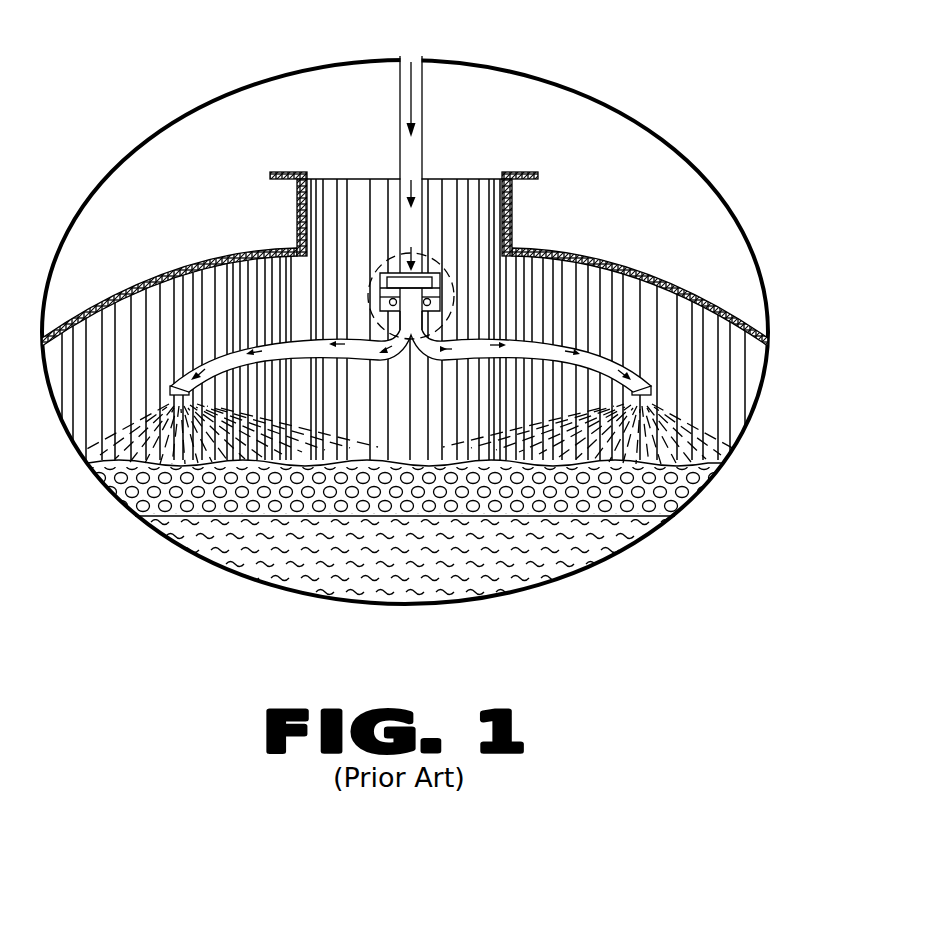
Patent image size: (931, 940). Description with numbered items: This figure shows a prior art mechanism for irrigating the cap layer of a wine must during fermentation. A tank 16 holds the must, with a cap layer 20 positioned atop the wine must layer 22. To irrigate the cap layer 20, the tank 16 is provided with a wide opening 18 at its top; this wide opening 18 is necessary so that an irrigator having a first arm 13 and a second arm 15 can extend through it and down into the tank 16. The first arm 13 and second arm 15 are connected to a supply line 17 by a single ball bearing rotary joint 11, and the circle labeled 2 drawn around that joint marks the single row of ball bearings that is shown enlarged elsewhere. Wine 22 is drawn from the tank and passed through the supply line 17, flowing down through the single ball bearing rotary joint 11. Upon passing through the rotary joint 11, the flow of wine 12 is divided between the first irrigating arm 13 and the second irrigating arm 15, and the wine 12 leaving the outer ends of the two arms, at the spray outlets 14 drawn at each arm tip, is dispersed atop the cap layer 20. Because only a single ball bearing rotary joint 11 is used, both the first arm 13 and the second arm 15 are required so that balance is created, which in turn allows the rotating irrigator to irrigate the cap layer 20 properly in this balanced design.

The circle 2 is at (449, 252).
The single ball bearing rotary joint 11 is at (447, 290).
The flow of wine 12 is at (410, 146).
The first arm 13 is at (565, 343).
The spray nozzles 14 is at (170, 425).
The second arm 15 is at (241, 360).
The tank 16 is at (210, 257).
The supply line 17 is at (423, 145).
The wide opening 18 is at (358, 187).
The cap layer 20 is at (418, 483).
The wine must layer 22 is at (583, 543).